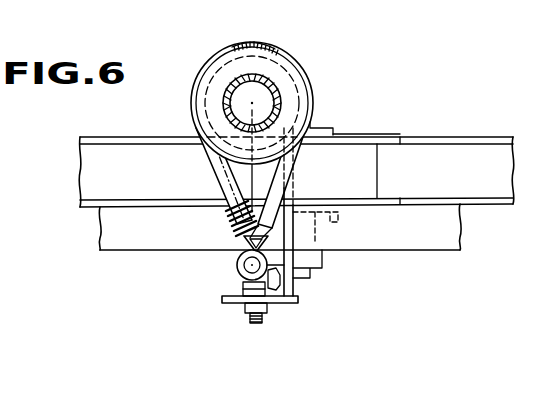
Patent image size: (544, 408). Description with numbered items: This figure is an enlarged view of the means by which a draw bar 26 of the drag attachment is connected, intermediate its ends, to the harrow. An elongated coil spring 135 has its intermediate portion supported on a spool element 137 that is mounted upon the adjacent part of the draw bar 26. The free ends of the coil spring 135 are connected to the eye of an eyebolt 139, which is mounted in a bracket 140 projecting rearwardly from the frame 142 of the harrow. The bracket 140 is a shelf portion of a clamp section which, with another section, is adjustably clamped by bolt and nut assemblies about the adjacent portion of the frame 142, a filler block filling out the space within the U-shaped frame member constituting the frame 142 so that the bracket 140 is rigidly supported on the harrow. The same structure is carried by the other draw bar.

The draw bar 26 is at (270, 86).
The spool element 137 is at (302, 108).
The elongated coil spring 135 is at (300, 124).
The eyebolt 139 is at (267, 263).
The bracket 140 is at (232, 300).
The frame 142 is at (428, 236).